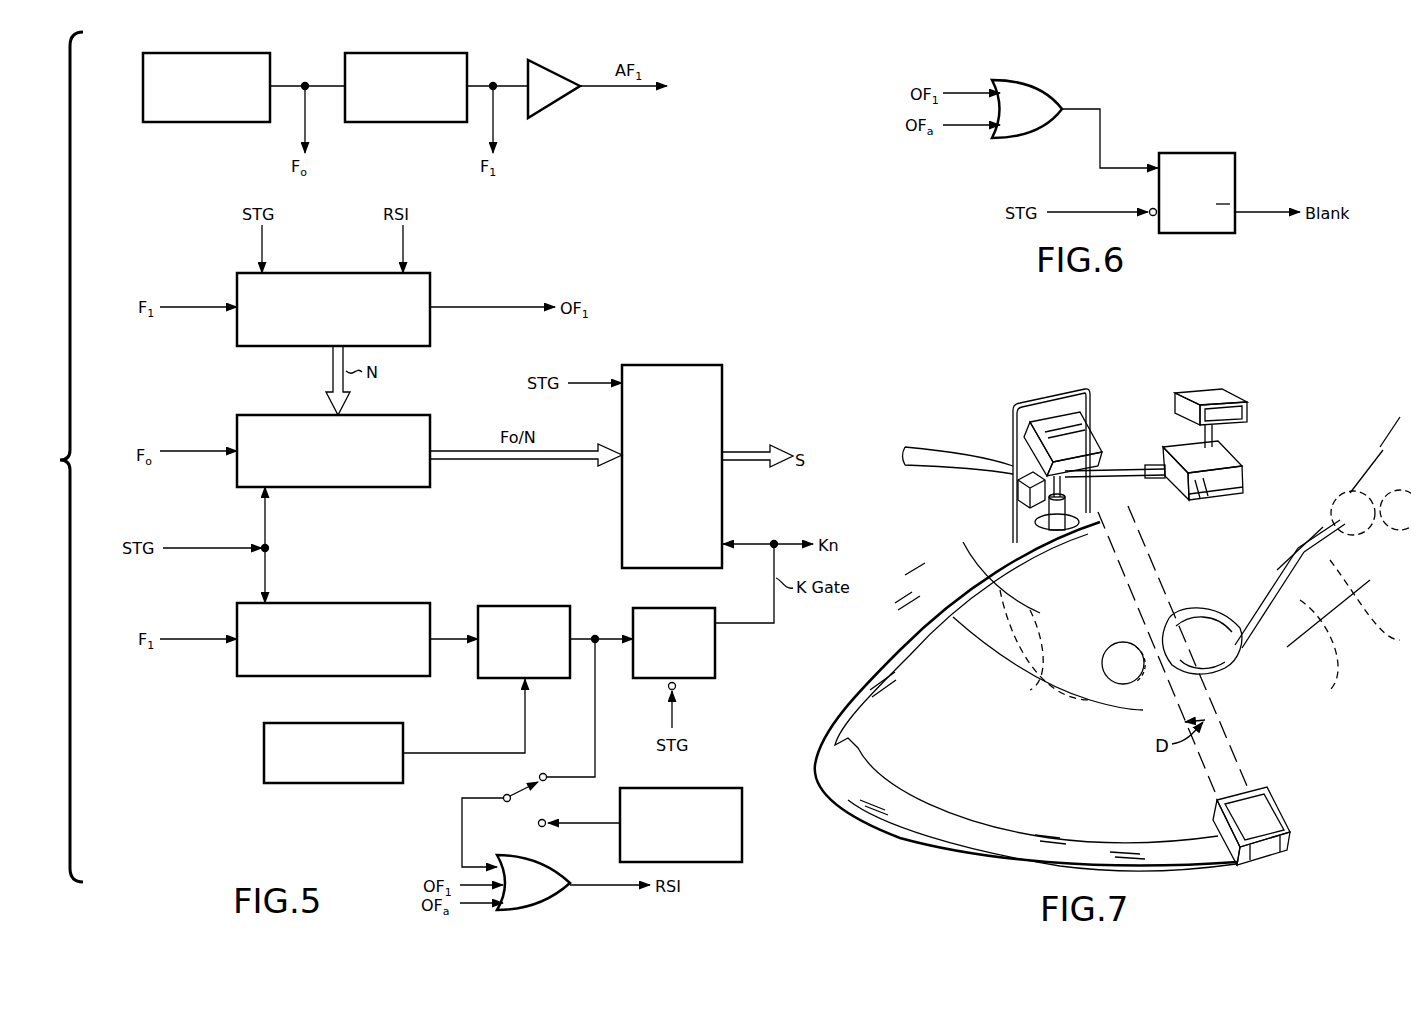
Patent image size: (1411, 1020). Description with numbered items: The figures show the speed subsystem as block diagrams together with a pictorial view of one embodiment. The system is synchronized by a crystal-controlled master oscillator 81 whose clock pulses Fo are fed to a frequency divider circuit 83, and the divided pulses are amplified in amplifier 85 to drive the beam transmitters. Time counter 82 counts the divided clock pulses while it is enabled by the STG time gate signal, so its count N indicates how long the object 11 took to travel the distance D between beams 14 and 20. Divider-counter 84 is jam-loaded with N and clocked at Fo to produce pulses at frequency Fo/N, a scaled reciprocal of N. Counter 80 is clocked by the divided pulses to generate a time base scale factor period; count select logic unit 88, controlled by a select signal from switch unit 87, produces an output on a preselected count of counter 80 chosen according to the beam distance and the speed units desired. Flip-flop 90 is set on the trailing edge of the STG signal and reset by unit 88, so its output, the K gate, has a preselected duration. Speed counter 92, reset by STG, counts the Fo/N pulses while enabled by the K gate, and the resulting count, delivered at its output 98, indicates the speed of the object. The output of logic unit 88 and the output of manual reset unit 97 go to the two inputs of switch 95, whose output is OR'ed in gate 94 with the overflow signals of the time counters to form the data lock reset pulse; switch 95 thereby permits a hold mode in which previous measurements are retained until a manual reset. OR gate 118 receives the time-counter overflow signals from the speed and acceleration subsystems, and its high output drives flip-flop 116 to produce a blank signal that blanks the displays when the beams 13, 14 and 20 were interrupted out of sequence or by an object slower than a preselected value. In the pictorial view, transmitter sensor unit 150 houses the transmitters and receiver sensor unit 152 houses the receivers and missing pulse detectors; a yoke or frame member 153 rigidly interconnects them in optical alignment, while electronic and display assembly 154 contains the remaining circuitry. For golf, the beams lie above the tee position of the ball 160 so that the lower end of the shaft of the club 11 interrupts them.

In FIG. 5, the crystal-controlled master oscillator 81 is at (218, 53).
In FIG. 5, the frequency divider circuit 83 is at (416, 53).
In FIG. 5, the amplifier 85 is at (569, 43).
In FIG. 5, the time counter 82 is at (340, 273).
In FIG. 5, the divider-counter 84 is at (418, 477).
In FIG. 5, the speed counter 92 is at (712, 373).
In FIG. 5, the S counter output 98 is at (746, 451).
In FIG. 5, the counter 80 is at (390, 603).
In FIG. 5, the count select logic unit 88 is at (556, 606).
In FIG. 5, the flip-flop 90 is at (637, 612).
In FIG. 5, the switch unit 87 is at (264, 726).
In FIG. 5, the switch 95 is at (516, 780).
In FIG. 5, the manual reset unit 97 is at (742, 772).
In FIG. 5, the OR gate 94 is at (560, 870).
In FIG. 6, the OR gate 118 is at (1021, 85).
In FIG. 6, the flip-flop 116 is at (1222, 160).
In FIG. 7, the transmitter sensor unit 150 is at (1092, 438).
In FIG. 7, the electronic and display assembly 154 is at (1228, 463).
In FIG. 7, the receiver sensor unit 152 is at (1270, 797).
In FIG. 7, the yoke or frame member 153 is at (936, 813).
In FIG. 7, the ball 160 is at (1135, 684).
In FIG. 7, the beam 13 is at (1222, 720).
In FIG. 7, the beam 14 is at (1243, 754).
In FIG. 7, the beam 20 is at (1216, 786).
In FIG. 7, the object 11 is at (1205, 558).